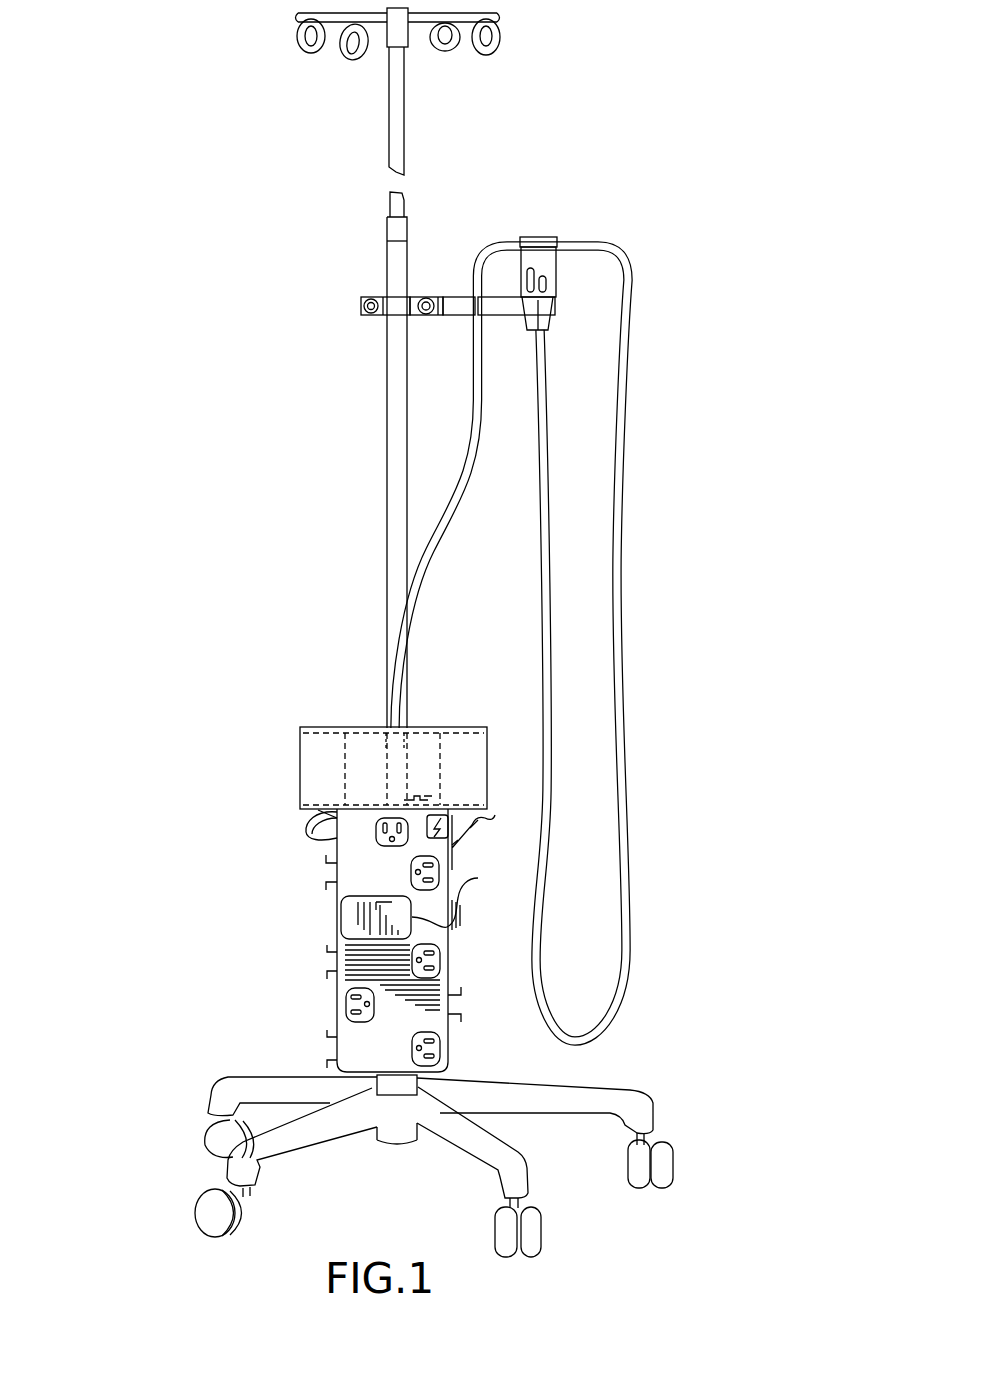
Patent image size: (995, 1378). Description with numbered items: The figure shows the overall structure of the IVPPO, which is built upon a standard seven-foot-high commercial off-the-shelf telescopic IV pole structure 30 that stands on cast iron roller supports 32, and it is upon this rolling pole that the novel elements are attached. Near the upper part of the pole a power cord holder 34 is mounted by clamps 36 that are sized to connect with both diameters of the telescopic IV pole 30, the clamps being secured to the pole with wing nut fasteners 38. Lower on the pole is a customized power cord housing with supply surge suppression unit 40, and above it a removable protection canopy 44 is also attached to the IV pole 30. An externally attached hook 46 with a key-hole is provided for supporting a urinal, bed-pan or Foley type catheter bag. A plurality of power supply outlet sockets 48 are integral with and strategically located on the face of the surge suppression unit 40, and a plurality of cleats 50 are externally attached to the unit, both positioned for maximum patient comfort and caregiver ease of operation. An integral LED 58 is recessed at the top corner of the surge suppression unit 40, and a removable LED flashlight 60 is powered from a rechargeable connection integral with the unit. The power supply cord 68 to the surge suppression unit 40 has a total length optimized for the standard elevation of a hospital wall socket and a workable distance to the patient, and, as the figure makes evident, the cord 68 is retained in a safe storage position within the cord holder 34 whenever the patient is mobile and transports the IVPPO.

The telescopic IV pole structure 30 is at (388, 128).
The cast iron roller supports 32 is at (208, 1098).
The power cord holder 34 is at (456, 297).
The clamps 36 is at (360, 300).
The wing nut fasteners 38 is at (423, 316).
The surge suppression unit 40 is at (337, 998).
The removable protection canopy 44 is at (300, 760).
The hook 46 is at (452, 842).
The power supply outlet sockets 48 is at (448, 1047).
The cleats 50 is at (337, 883).
The LED 58 is at (452, 841).
The LED flashlight 60 is at (305, 832).
The power supply cord 68 is at (630, 382).